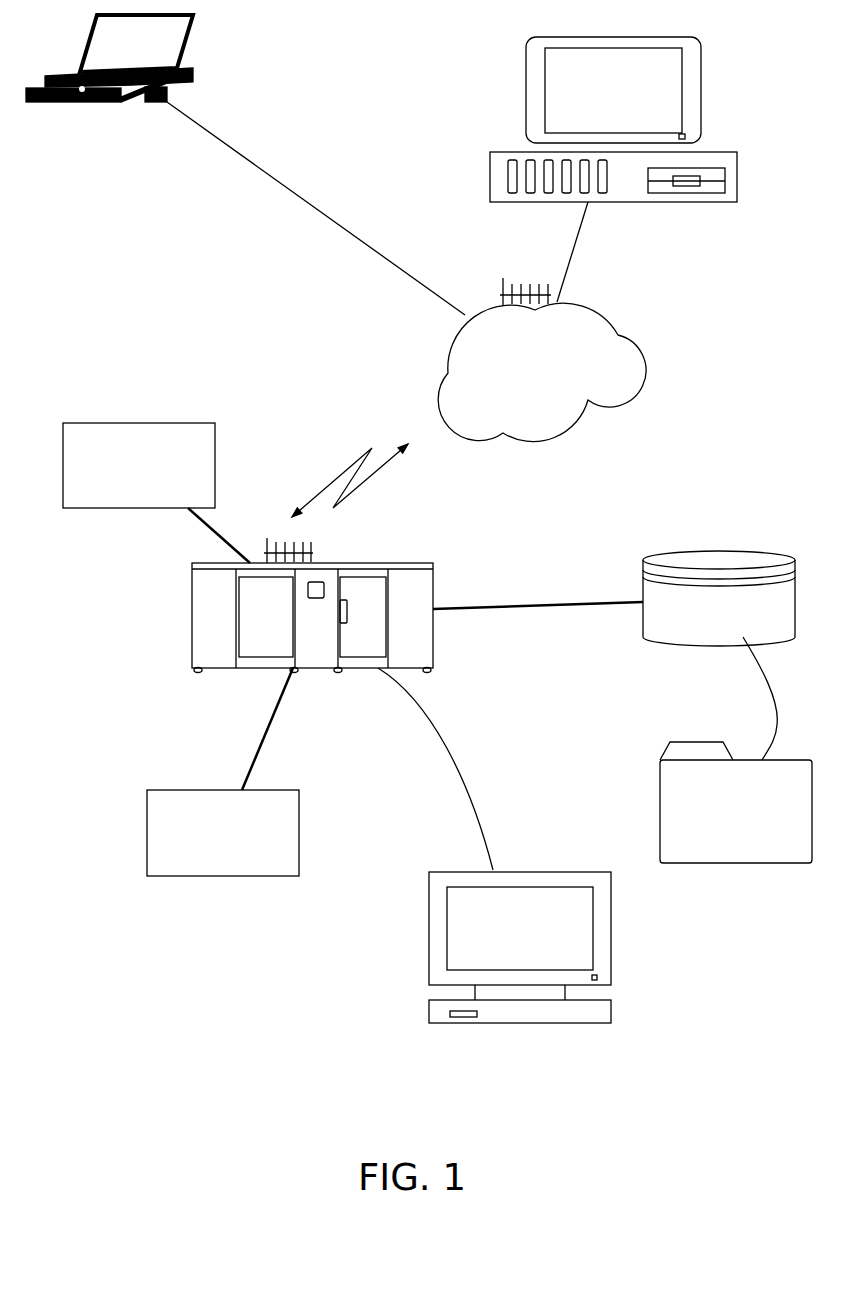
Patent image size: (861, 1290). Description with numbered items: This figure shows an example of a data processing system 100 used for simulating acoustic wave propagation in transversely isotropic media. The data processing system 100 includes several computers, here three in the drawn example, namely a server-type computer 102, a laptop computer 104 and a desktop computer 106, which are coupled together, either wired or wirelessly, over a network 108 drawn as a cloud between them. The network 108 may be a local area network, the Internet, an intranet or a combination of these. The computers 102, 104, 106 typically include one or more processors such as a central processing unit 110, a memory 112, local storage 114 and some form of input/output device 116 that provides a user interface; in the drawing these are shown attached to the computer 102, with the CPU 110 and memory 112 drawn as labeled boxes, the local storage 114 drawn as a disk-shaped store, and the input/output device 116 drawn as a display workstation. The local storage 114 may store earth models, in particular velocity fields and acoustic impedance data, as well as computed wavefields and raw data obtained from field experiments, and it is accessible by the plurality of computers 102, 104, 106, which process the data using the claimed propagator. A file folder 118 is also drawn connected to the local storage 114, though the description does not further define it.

The data processing system 100 is at (724, 1108).
The computer 102 is at (433, 588).
The computer 104 is at (197, 76).
The computer 106 is at (683, 202).
The network 108 is at (447, 368).
The central processing unit 110 is at (122, 423).
The memory 112 is at (147, 825).
The local storage 114 is at (718, 551).
The input/output device 116 is at (429, 947).
The file folder storage 118 is at (660, 803).